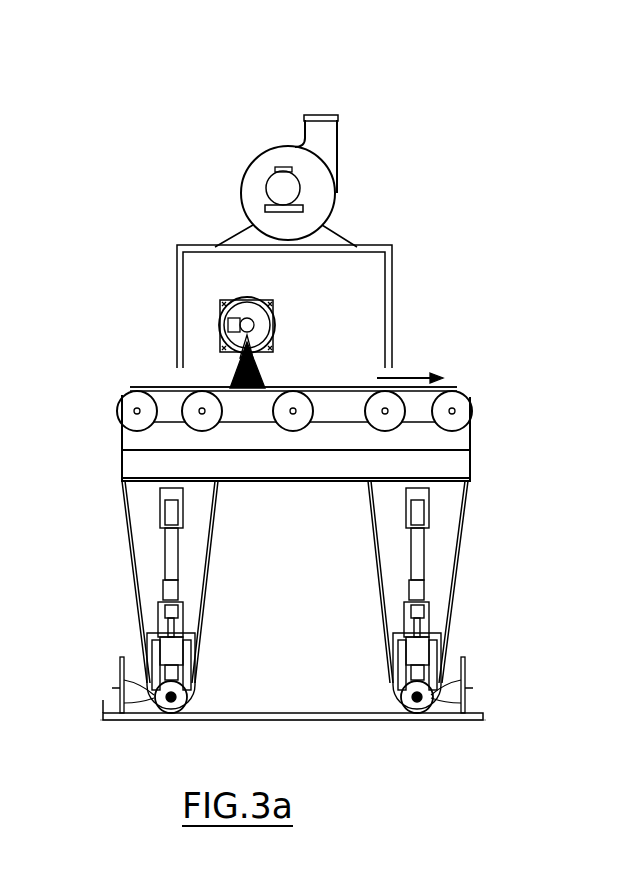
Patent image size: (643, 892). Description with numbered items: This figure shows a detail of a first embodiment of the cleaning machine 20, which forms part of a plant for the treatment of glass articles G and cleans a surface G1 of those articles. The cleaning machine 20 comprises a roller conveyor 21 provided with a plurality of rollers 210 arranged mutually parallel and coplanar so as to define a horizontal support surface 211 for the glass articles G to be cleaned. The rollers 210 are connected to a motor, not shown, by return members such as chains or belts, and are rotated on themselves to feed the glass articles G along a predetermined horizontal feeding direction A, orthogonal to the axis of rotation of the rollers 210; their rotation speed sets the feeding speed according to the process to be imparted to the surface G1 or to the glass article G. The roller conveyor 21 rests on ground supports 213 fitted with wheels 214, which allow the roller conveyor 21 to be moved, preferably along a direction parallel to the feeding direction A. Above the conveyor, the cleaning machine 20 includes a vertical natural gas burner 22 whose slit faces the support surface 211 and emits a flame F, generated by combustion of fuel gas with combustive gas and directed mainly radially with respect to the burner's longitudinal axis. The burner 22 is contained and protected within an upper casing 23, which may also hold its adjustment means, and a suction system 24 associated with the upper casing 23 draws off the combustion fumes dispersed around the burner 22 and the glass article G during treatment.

The cleaning machine 20 is at (507, 665).
The roller conveyor 21 is at (316, 418).
The rollers 210 is at (293, 420).
The horizontal support surface 211 is at (455, 388).
The ground supports 213 is at (138, 567).
The wheels 214 is at (178, 699).
The natural gas burner 22 is at (258, 318).
The upper casing 23 is at (177, 258).
The suction system 24 is at (297, 158).
The feeding direction A is at (405, 376).
The flame F is at (255, 370).
The glass articles G is at (247, 390).
The surface G1 is at (162, 388).